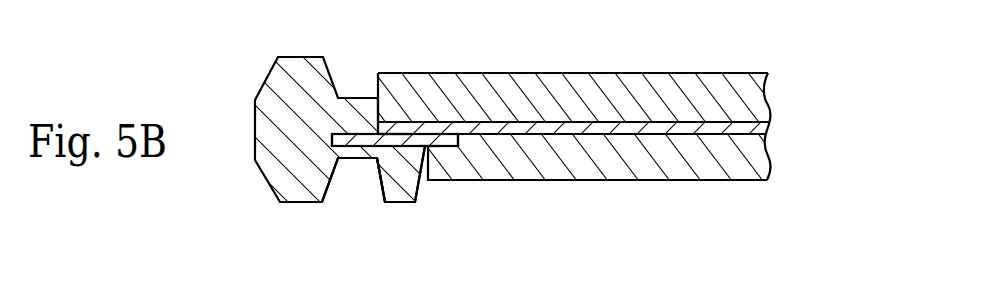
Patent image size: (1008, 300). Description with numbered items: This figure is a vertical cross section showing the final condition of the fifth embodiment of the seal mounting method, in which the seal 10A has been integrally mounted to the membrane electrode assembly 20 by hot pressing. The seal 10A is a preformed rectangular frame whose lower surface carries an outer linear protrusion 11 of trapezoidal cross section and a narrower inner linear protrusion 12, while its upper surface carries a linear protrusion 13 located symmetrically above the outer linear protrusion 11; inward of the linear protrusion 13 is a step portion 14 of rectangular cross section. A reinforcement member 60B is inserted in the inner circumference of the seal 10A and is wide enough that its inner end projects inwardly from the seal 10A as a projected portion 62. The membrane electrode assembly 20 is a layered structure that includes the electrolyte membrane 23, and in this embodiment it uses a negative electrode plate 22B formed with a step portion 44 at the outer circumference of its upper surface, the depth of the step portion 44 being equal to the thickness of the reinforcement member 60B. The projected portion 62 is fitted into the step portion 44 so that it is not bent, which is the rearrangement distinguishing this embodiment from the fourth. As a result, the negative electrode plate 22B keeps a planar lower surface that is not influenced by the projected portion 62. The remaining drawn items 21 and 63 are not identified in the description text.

The housing 10A is at (259, 81).
The bottom portion 11 is at (305, 203).
The protrusion 12 is at (400, 203).
The top surface 13 is at (298, 57).
The step portion 14 is at (362, 97).
The substrate assembly 20 is at (597, 69).
The upper substrate 21 is at (723, 73).
The lower substrate 22B is at (593, 181).
The intermediate layer 23 is at (647, 125).
The conductive plate 44 is at (450, 140).
The groove 60B is at (348, 146).
The second layer 62 is at (428, 137).
The first layer 63 is at (393, 133).